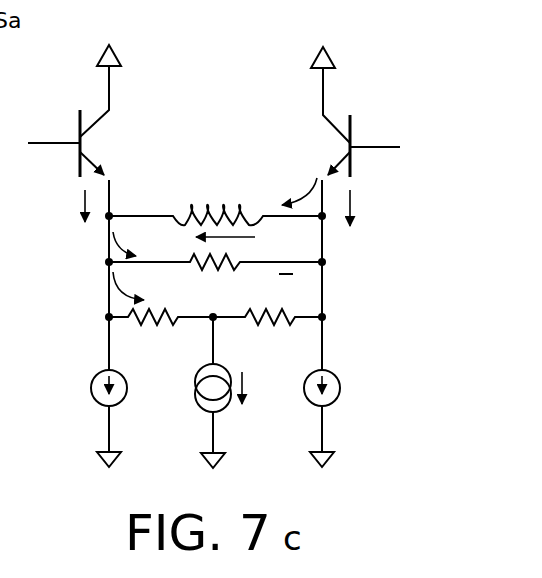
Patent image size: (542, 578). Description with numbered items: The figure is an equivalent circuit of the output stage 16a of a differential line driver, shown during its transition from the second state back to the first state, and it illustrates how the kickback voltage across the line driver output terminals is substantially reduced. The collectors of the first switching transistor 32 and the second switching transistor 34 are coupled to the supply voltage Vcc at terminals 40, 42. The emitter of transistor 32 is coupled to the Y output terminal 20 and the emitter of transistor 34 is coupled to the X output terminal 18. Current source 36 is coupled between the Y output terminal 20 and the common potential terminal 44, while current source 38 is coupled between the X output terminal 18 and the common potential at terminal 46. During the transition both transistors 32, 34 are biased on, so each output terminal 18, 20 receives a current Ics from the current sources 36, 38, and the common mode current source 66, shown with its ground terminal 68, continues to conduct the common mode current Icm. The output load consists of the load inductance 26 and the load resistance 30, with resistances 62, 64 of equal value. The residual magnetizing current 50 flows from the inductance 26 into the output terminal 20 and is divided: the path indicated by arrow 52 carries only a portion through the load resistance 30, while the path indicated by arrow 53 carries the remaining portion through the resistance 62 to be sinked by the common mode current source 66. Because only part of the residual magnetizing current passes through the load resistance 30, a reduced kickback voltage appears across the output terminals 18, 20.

The output stage 16a is at (406, 86).
The supply voltage terminal 40 is at (100, 62).
The supply voltage terminal 42 is at (336, 56).
The first switching transistor 32 is at (69, 126).
The second switching transistor 34 is at (367, 130).
The Y output terminal 20 is at (105, 224).
The X output terminal 18 is at (324, 220).
The load inductance 26 is at (202, 209).
The residual magnetizing current 50 is at (238, 241).
The load resistance 30 is at (198, 271).
The current path arrow 52 is at (110, 246).
The current path arrow 53 is at (114, 298).
The resistance 62 is at (168, 328).
The resistance 64 is at (271, 328).
The current source 36 is at (96, 408).
The common mode current source 66 is at (218, 412).
The current source 38 is at (332, 410).
The common potential terminal 44 is at (117, 462).
The ground terminal 68 is at (226, 462).
The common potential terminal 46 is at (340, 464).